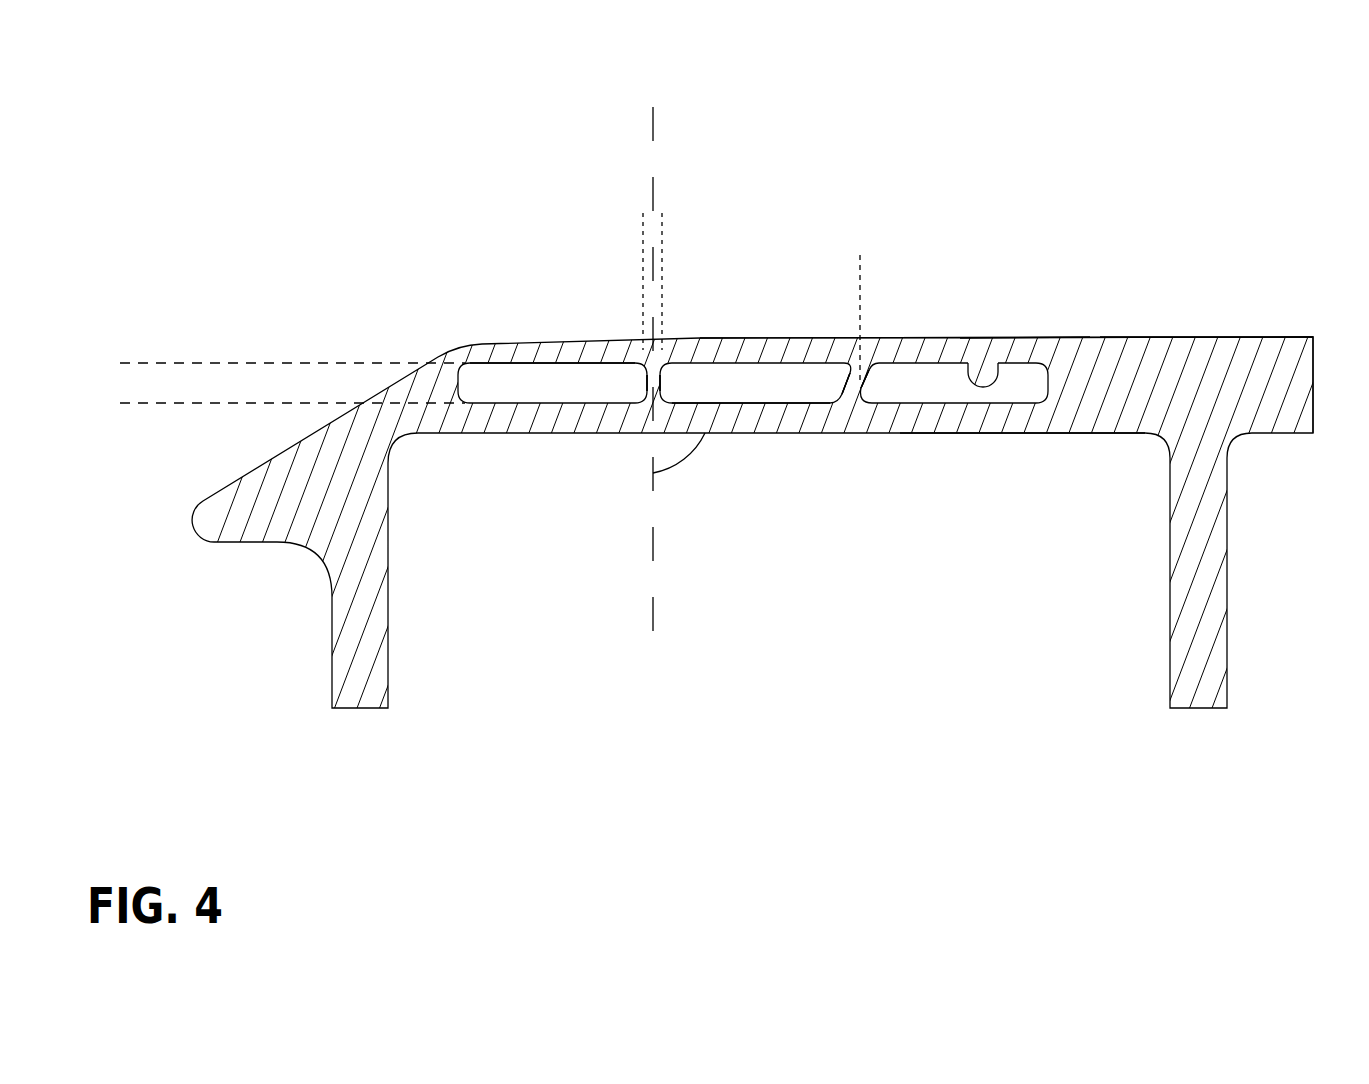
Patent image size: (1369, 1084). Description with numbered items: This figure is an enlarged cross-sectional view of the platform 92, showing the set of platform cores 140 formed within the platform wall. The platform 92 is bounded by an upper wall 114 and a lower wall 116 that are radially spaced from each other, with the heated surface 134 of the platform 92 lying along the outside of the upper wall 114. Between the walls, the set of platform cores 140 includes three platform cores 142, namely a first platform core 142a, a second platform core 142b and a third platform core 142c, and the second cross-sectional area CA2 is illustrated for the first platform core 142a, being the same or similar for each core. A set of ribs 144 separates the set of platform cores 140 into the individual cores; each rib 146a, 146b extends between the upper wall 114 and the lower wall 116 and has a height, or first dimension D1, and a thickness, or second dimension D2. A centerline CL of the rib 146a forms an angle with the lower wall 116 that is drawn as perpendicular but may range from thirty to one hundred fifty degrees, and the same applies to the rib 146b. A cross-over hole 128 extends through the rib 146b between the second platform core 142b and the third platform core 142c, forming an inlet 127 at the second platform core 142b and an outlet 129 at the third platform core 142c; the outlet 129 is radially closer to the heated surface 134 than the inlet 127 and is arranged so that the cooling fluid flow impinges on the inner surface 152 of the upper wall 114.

The platform 92 is at (1023, 337).
The upper wall 114 is at (798, 338).
The lower wall 116 is at (984, 418).
The inlet 127 is at (848, 396).
The cross-over hole 128 is at (871, 305).
The outlet 129 is at (863, 380).
The heated surface 134 is at (1172, 337).
The set of platform cores 140 is at (742, 405).
The platform core 142 is at (784, 326).
The first platform core 142a is at (495, 375).
The second platform core 142b is at (695, 373).
The third platform core 142c is at (1033, 388).
The set of ribs 144 is at (645, 400).
The rib 146a is at (648, 397).
The rib 146b is at (858, 395).
The inner surface 152 is at (997, 363).
The second cross-sectional area CA2 is at (573, 392).
The centerline CL is at (649, 359).
The first dimension D1 is at (156, 406).
The second dimension D2 is at (573, 231).